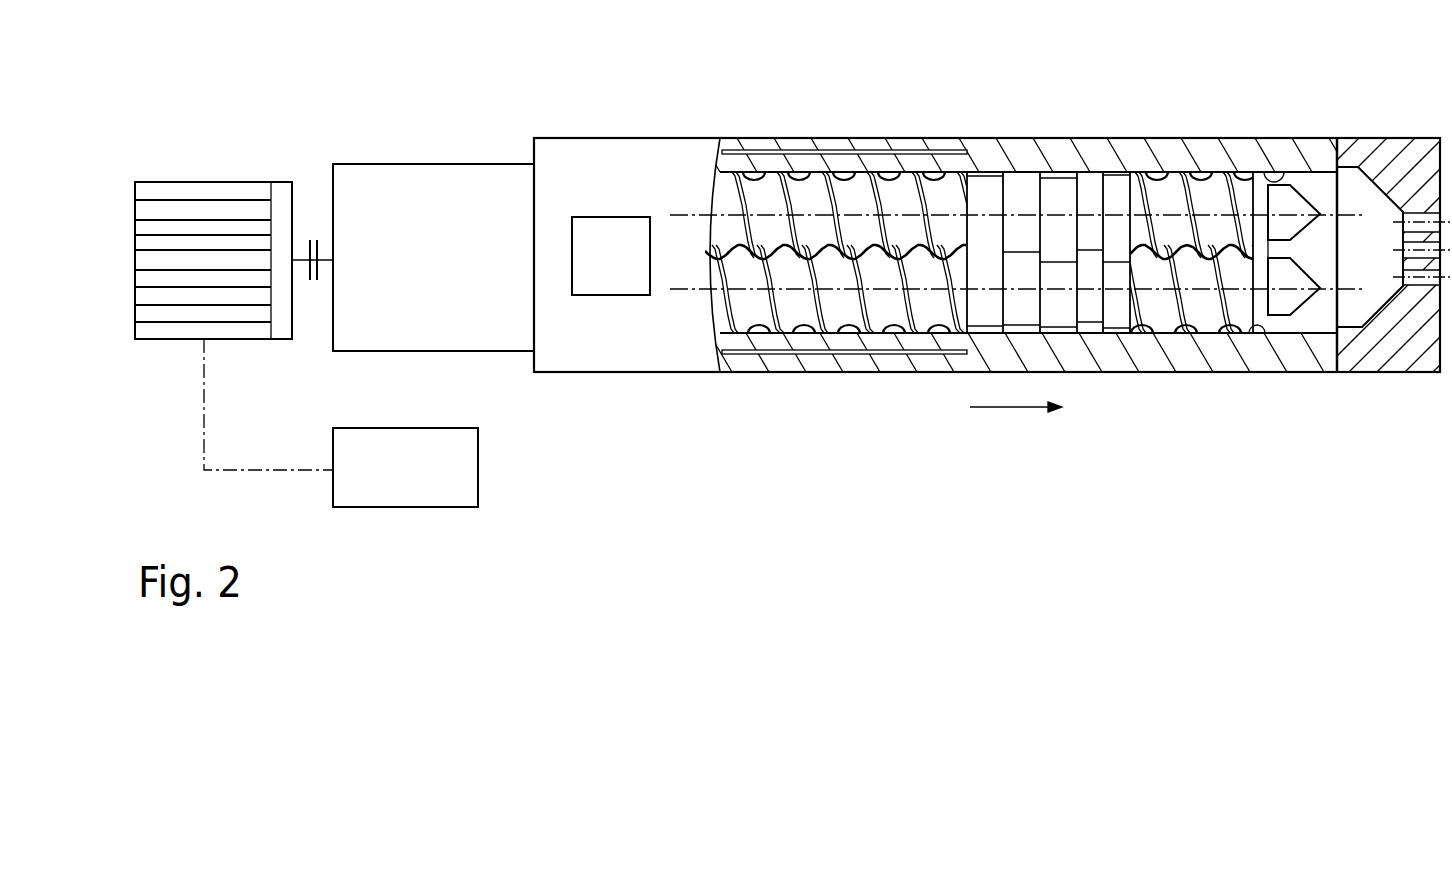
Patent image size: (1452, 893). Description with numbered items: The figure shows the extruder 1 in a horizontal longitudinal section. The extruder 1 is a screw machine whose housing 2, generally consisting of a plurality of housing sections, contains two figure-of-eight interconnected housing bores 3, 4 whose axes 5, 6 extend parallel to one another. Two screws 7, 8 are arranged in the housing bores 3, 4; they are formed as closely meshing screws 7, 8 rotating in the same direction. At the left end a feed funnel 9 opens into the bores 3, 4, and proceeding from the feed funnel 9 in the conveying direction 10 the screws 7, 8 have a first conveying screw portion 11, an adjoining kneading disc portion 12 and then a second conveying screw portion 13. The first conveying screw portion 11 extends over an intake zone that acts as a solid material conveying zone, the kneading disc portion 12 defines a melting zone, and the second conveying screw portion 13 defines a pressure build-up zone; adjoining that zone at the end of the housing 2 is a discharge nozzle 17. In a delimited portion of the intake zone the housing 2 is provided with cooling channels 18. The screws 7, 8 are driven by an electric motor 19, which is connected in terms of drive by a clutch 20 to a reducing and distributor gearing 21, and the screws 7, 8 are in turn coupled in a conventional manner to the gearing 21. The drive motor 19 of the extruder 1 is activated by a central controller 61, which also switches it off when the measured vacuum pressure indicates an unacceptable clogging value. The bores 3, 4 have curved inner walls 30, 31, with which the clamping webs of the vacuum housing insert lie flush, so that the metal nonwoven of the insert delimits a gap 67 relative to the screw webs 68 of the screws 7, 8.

The extruder 1 is at (684, 94).
The housing 2 is at (1148, 140).
The housing bore 3 is at (1167, 328).
The housing bore 4 is at (1223, 170).
The axis 5 is at (1331, 290).
The axis 6 is at (1330, 207).
The screw 7 is at (866, 320).
The screw 8 is at (850, 184).
The feed funnel 9 is at (612, 225).
The conveying direction 10 is at (1013, 408).
The first conveying screw portion 11 is at (793, 166).
The kneading disc portion 12 is at (1020, 182).
The second conveying screw portion 13 is at (1149, 181).
The discharge nozzle 17 is at (1430, 212).
The cooling channels 18 is at (945, 150).
The electric motor 19 is at (212, 185).
The clutch 20 is at (312, 240).
The reducing and distributor gearing 21 is at (425, 170).
The inner wall 30 is at (1249, 332).
The inner wall 31 is at (1266, 167).
The central controller 61 is at (478, 465).
The gap 67 is at (907, 332).
The screw webs 68 is at (823, 334).